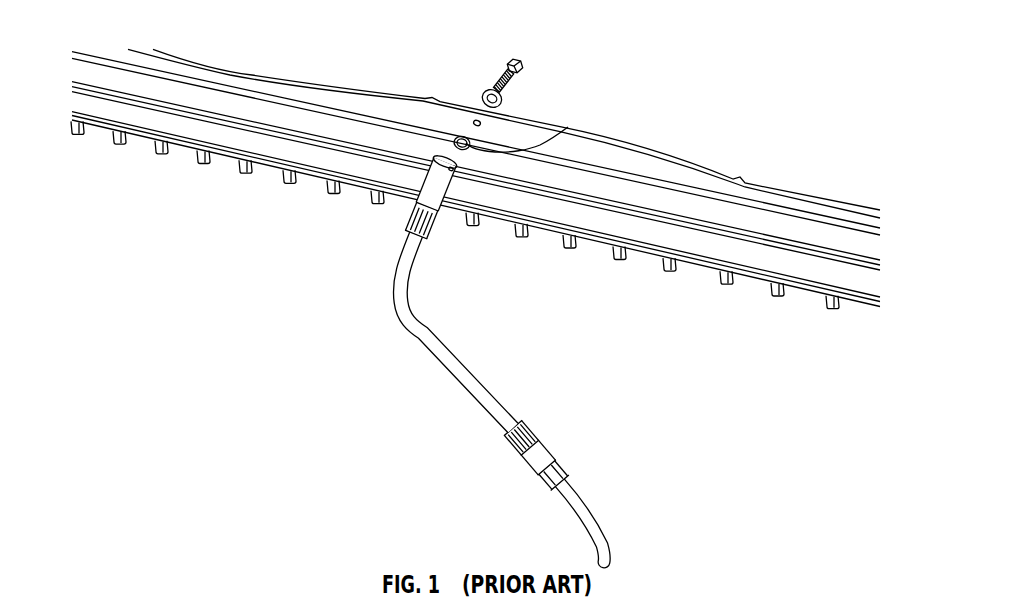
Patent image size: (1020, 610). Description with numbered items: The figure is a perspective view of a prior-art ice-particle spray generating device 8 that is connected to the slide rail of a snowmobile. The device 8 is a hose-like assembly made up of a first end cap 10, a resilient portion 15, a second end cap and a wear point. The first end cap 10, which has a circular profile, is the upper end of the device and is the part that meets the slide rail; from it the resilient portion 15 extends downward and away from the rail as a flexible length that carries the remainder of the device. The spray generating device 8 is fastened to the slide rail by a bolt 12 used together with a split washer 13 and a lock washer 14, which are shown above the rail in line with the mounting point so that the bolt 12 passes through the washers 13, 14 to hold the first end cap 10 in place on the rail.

The ice-particle spray generating device 8 is at (502, 357).
The first end cap 10 is at (448, 207).
The bolt 12 is at (503, 67).
The split washer 13 is at (503, 103).
The lock washer 14 is at (568, 127).
The resilient portion 15 is at (482, 397).